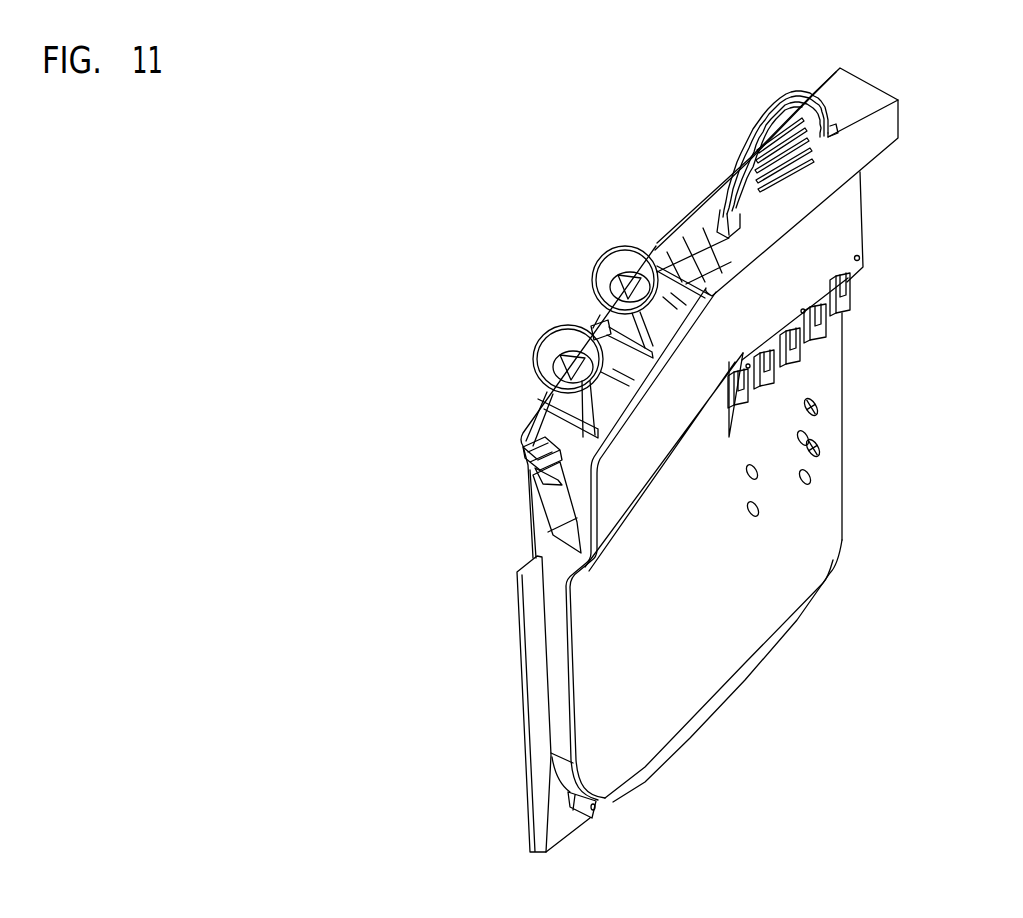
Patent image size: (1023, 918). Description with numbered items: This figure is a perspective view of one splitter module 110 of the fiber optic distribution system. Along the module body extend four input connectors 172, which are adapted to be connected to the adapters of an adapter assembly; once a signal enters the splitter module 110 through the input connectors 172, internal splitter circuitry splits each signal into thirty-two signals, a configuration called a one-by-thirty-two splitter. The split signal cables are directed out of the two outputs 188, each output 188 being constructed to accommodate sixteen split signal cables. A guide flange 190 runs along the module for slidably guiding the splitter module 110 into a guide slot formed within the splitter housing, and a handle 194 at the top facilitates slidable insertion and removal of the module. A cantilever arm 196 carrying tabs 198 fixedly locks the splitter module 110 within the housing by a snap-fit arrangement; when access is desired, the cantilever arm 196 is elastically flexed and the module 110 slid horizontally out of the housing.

The splitter module 110 is at (597, 203).
The handle 194 is at (810, 118).
The outputs 188 is at (562, 349).
The input connectors 172 is at (842, 312).
The tabs 198 is at (540, 478).
The cantilever arm 196 is at (552, 507).
The guide flanges 190 is at (527, 703).